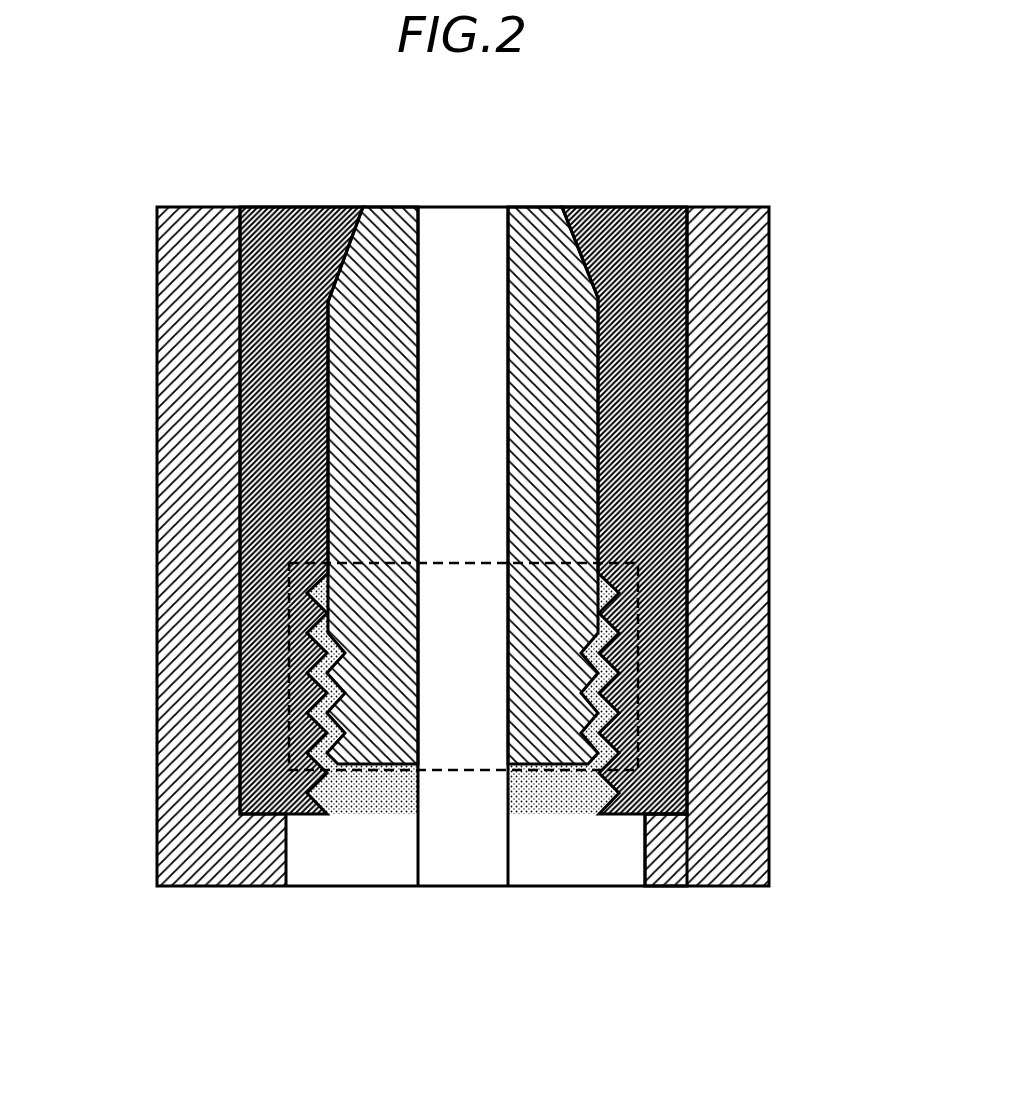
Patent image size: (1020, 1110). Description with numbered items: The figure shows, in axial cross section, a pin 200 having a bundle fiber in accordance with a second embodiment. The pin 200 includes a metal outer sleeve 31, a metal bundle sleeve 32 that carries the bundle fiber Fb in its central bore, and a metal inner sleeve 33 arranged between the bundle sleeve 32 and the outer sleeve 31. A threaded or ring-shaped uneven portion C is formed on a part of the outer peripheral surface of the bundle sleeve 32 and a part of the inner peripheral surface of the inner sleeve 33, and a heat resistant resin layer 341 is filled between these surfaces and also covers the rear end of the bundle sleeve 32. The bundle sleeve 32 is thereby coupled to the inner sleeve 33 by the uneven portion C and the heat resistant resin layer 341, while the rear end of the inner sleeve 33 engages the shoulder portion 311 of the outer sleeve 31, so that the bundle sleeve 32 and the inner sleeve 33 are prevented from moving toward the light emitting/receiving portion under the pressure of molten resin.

The pin having a bundle fiber 200 is at (459, 583).
The outer sleeve 31 is at (520, 576).
The shoulder portion 311 is at (663, 817).
The bundle sleeve 32 is at (568, 368).
The inner sleeve 33 is at (662, 313).
The heat resistant resin layer 341 is at (547, 788).
The uneven portion C is at (352, 778).
The bundle fiber Fb is at (478, 416).